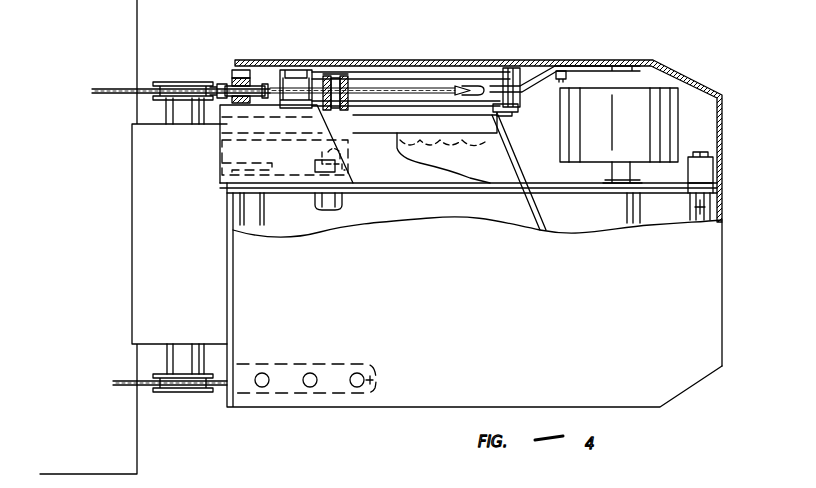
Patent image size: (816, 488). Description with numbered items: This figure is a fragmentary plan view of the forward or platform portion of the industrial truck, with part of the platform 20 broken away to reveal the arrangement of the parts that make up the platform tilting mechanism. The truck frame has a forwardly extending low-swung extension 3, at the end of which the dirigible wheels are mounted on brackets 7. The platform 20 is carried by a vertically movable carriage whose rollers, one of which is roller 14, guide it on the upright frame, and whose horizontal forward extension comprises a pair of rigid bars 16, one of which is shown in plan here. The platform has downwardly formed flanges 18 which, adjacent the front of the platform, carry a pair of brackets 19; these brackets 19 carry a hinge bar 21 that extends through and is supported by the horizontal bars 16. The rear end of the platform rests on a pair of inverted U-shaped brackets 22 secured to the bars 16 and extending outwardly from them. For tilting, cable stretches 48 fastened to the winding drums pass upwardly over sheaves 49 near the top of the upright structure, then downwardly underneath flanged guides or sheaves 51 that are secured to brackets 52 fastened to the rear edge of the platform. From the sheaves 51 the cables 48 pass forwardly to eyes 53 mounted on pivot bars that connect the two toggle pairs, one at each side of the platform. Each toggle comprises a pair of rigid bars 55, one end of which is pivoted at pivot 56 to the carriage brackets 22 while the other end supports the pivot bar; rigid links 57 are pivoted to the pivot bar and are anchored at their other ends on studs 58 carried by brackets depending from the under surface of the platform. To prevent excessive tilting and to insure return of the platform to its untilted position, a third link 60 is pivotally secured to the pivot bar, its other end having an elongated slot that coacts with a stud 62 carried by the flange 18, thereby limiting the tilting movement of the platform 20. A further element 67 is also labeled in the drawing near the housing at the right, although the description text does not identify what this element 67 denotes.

The low-swung extension 3 is at (425, 123).
The brackets 7 is at (471, 172).
The roller 14 is at (273, 140).
The rigid bars 16 is at (372, 190).
The flanges 18 is at (650, 58).
The brackets 19 is at (705, 172).
The platform 20 is at (474, 295).
The hinge bar 21 is at (700, 152).
The brackets 22 is at (323, 143).
The cable stretches 48 is at (125, 88).
The sheaves 49 is at (184, 88).
The flanged guides or sheaves 51 is at (240, 89).
The brackets 52 is at (233, 85).
The eyes 53 is at (478, 90).
The rigid bars 55 is at (398, 104).
The pivot 56 is at (292, 70).
The rigid links 57 is at (447, 78).
The studs 58 is at (333, 78).
The third link 60 is at (553, 68).
The stud 62 is at (557, 81).
The motor 67 is at (625, 100).